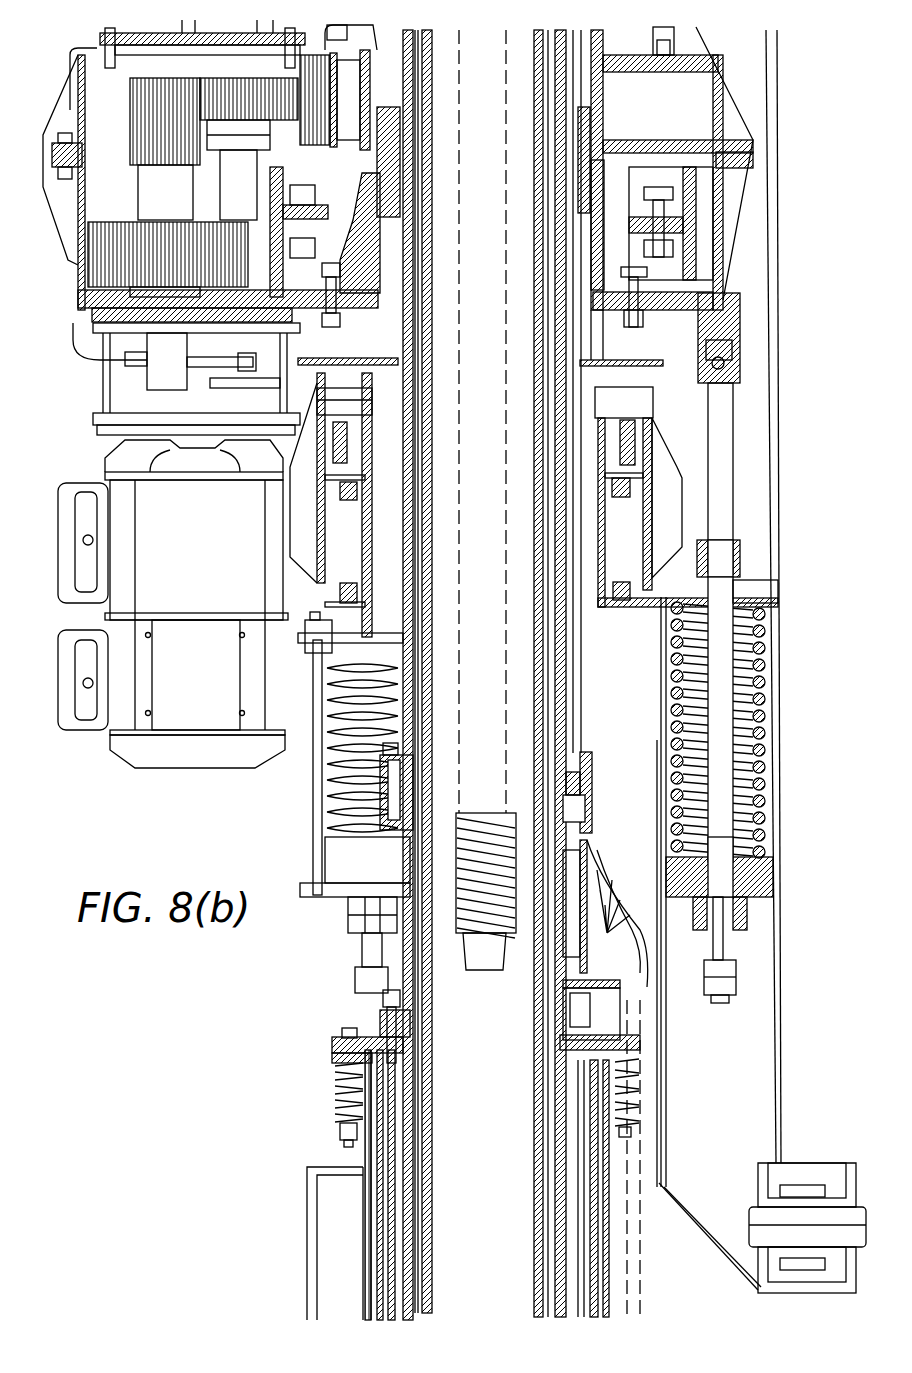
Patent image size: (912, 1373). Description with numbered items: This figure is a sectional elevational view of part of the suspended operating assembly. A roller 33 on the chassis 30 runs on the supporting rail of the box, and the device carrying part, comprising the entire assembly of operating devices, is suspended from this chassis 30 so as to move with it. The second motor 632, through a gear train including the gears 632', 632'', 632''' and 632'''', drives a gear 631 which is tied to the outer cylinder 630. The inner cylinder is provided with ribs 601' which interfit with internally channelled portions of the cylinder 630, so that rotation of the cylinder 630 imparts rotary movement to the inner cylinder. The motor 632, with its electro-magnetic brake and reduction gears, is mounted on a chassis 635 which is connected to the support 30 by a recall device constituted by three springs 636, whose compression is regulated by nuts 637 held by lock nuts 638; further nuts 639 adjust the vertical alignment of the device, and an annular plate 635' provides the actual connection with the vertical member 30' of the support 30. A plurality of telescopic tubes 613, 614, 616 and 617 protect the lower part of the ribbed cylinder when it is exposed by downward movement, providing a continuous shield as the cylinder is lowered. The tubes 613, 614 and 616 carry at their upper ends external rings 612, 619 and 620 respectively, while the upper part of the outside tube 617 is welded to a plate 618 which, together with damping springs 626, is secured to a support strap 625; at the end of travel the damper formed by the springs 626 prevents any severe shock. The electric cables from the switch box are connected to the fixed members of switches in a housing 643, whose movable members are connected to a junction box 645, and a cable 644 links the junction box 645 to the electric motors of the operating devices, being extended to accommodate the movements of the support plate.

The outer cylinder 630 is at (401, 334).
The gear 631 is at (267, 187).
The second motor 632 is at (155, 593).
The gear 632' is at (133, 258).
The gear 632'' is at (206, 173).
The gear 632''' is at (220, 110).
The gear 632'''' is at (353, 72).
The chassis 635 is at (770, 435).
The annular plate 635' is at (535, 738).
The springs 636 is at (337, 787).
The nuts 637 is at (750, 912).
The lock nuts 638 is at (345, 940).
The nuts 639 is at (737, 986).
The housing 643 is at (573, 820).
The junction box 645 is at (580, 895).
The support strap 625 is at (333, 1035).
The plate 618 is at (345, 1036).
The damping springs 626 is at (335, 1075).
The external ring 620 is at (370, 1097).
The external ring 619 is at (377, 1103).
The external ring 612 is at (333, 1108).
The ribs 601' is at (484, 1185).
The telescopic tube 613 is at (395, 1230).
The telescopic tube 614 is at (385, 1250).
The telescopic tube 616 is at (372, 1270).
The telescopic tube 617 is at (365, 1297).
The roller 33 is at (772, 1224).
The chassis 30 is at (689, 1262).
The vertical member 30' is at (801, 1049).
The cable 644 is at (640, 1298).